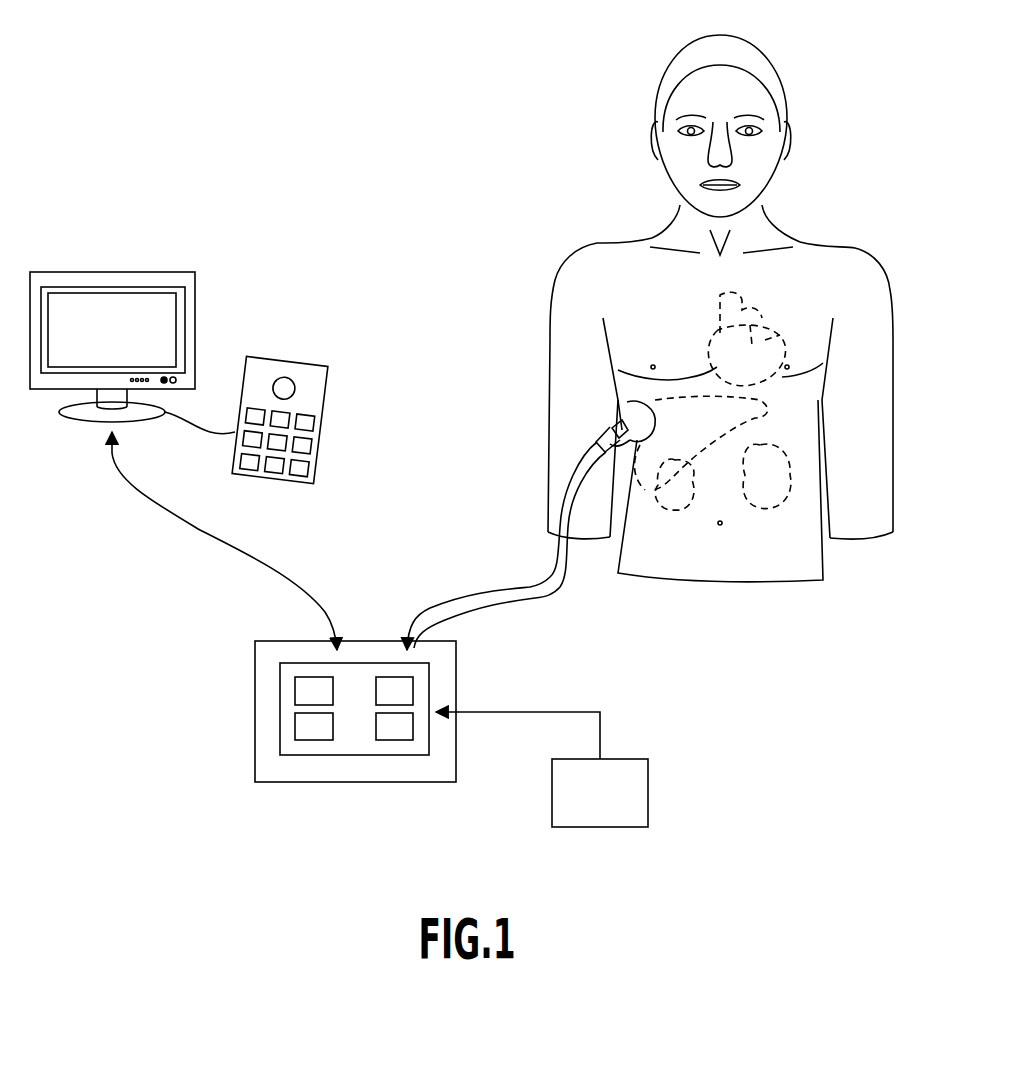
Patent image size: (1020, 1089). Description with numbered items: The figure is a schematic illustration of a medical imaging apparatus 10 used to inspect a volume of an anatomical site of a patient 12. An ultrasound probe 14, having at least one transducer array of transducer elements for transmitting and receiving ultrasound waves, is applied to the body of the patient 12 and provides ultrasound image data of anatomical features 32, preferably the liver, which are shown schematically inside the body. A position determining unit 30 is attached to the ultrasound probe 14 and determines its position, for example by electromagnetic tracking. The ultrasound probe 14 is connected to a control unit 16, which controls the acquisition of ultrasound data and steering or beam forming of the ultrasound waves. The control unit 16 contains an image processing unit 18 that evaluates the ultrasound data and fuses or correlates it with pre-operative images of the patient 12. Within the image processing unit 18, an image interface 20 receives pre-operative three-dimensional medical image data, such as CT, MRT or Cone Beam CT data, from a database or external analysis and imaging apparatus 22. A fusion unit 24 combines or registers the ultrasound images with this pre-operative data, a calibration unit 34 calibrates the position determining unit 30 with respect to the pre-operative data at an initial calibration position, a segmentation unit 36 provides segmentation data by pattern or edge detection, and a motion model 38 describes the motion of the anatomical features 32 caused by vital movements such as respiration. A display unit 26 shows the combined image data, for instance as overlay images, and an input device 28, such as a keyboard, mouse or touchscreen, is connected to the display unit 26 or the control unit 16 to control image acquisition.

The medical imaging apparatus 10 is at (445, 90).
The patient 12 is at (818, 265).
The ultrasound probe 14 is at (638, 418).
The control unit 16 is at (405, 782).
The image processing unit 18 is at (355, 755).
The image interface 20 is at (455, 712).
The database or external analysis and imaging apparatus 22 is at (648, 788).
The fusion unit 24 is at (413, 686).
The display unit 26 is at (110, 272).
The input device 28 is at (264, 370).
The position determining unit 30 is at (612, 428).
The anatomical features 32 is at (657, 523).
The calibration unit 34 is at (413, 735).
The segmentation unit 36 is at (296, 718).
The motion model 38 is at (296, 688).